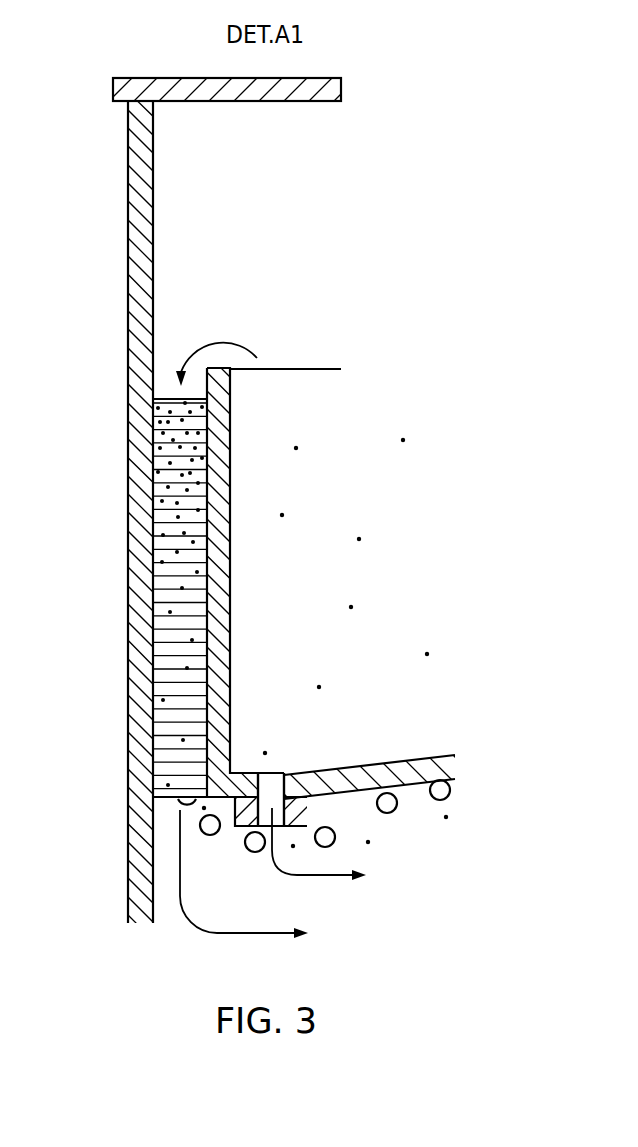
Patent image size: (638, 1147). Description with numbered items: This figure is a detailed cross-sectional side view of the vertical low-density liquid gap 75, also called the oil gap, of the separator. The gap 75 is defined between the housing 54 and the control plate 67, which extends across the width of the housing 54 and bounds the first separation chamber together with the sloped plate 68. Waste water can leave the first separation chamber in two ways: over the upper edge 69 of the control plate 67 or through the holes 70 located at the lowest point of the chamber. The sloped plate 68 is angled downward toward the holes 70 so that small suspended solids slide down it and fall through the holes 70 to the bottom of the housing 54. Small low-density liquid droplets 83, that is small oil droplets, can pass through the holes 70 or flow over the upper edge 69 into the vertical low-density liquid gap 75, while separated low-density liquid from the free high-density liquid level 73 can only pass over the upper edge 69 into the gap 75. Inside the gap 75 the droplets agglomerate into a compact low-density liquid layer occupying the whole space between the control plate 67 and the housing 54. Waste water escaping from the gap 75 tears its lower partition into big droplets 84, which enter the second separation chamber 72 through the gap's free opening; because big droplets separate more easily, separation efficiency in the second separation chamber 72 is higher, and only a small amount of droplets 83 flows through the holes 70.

The housing 54 is at (128, 187).
The control plate 67 is at (231, 593).
The sloped plate 68 is at (410, 785).
The upper edge 69 is at (222, 368).
The holes 70 is at (275, 772).
The second separation chamber 72 is at (413, 918).
The free high-density liquid level 73 is at (295, 367).
The vertical low-density liquid gap 75 is at (160, 663).
The low-density liquid droplets 83 is at (359, 539).
The big droplets 84 is at (255, 852).